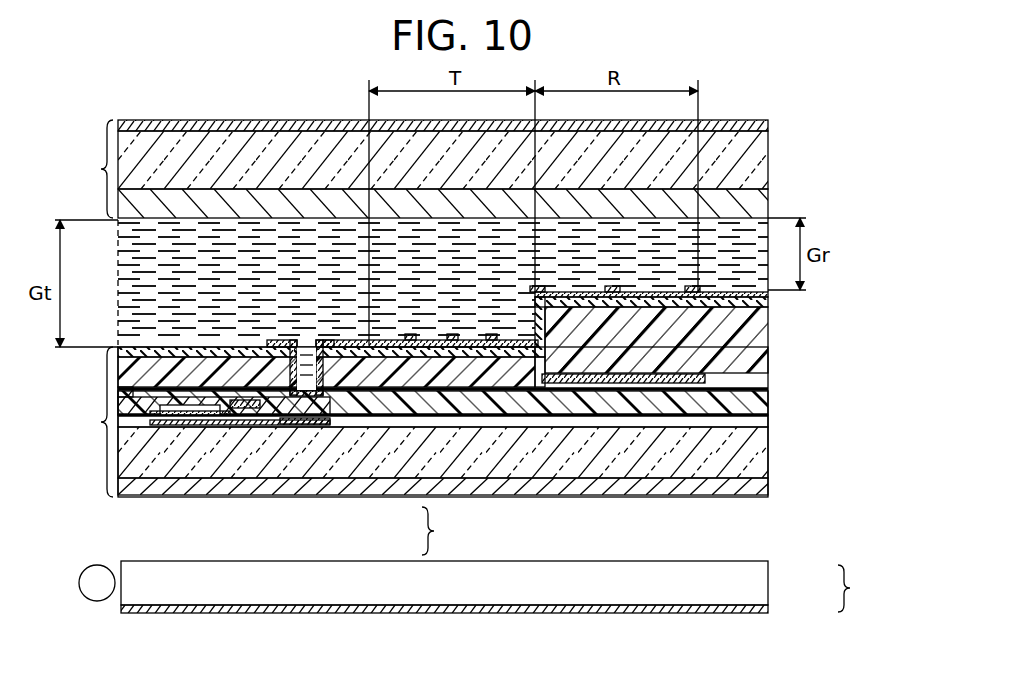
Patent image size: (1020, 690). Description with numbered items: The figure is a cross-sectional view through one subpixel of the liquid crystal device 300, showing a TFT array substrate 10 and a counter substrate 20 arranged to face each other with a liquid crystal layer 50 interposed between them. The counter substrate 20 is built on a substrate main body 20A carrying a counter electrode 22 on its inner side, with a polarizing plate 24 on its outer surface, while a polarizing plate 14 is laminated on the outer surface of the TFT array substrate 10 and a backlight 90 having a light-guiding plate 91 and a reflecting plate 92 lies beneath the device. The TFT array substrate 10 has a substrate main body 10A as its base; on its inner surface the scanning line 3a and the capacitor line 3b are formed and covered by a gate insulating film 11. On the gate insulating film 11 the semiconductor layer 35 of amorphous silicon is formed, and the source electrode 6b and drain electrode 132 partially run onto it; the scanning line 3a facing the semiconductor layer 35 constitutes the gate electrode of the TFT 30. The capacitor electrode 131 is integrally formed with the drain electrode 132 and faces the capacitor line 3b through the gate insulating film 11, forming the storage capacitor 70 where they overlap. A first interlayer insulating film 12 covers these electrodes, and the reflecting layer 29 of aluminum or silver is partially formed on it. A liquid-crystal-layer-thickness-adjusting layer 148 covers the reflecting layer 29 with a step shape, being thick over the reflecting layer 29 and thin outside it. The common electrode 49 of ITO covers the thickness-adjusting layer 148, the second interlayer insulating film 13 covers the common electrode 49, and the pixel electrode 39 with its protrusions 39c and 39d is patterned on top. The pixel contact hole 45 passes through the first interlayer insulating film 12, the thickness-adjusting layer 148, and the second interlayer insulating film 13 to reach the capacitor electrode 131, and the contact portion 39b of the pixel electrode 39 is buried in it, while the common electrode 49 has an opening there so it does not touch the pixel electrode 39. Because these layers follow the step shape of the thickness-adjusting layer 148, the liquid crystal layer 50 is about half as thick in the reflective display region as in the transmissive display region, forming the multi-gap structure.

The liquid crystal device 300 is at (782, 100).
The counter substrate 20 is at (455, 164).
The polarizing plate 24 is at (768, 125).
The substrate main body 20A is at (768, 160).
The counter electrode 22 is at (768, 200).
The liquid crystal layer 50 is at (126, 266).
The TFT array substrate 10 is at (469, 392).
The substrate main body 10A is at (768, 450).
The polarizing plate 14 is at (768, 488).
The gate insulating film 11 is at (768, 420).
The first interlayer insulating film 12 is at (768, 398).
The liquid-crystal-layer-thickness-adjusting layer 148 is at (740, 360).
The common electrode 49 is at (768, 302).
The second interlayer insulating film 13 is at (768, 294).
The pixel electrode 39 is at (365, 343).
The contact portion 39b is at (282, 340).
The protrusions 39c is at (410, 334).
The protrusions 39d is at (540, 288).
The pixel contact hole 45 is at (322, 340).
The reflecting layer 29 is at (612, 383).
The TFT 30 is at (290, 477).
The semiconductor layer 35 is at (175, 415).
The scanning line 3a is at (200, 415).
The drain electrode 132 is at (245, 408).
The capacitor electrode 131 is at (345, 424).
The capacitor line 3b is at (352, 426).
The storage capacitor 70 is at (306, 487).
The source electrode 6b is at (130, 396).
The backlight 90 is at (477, 587).
The light-guiding plate 91 is at (768, 567).
The reflecting plate 92 is at (768, 609).